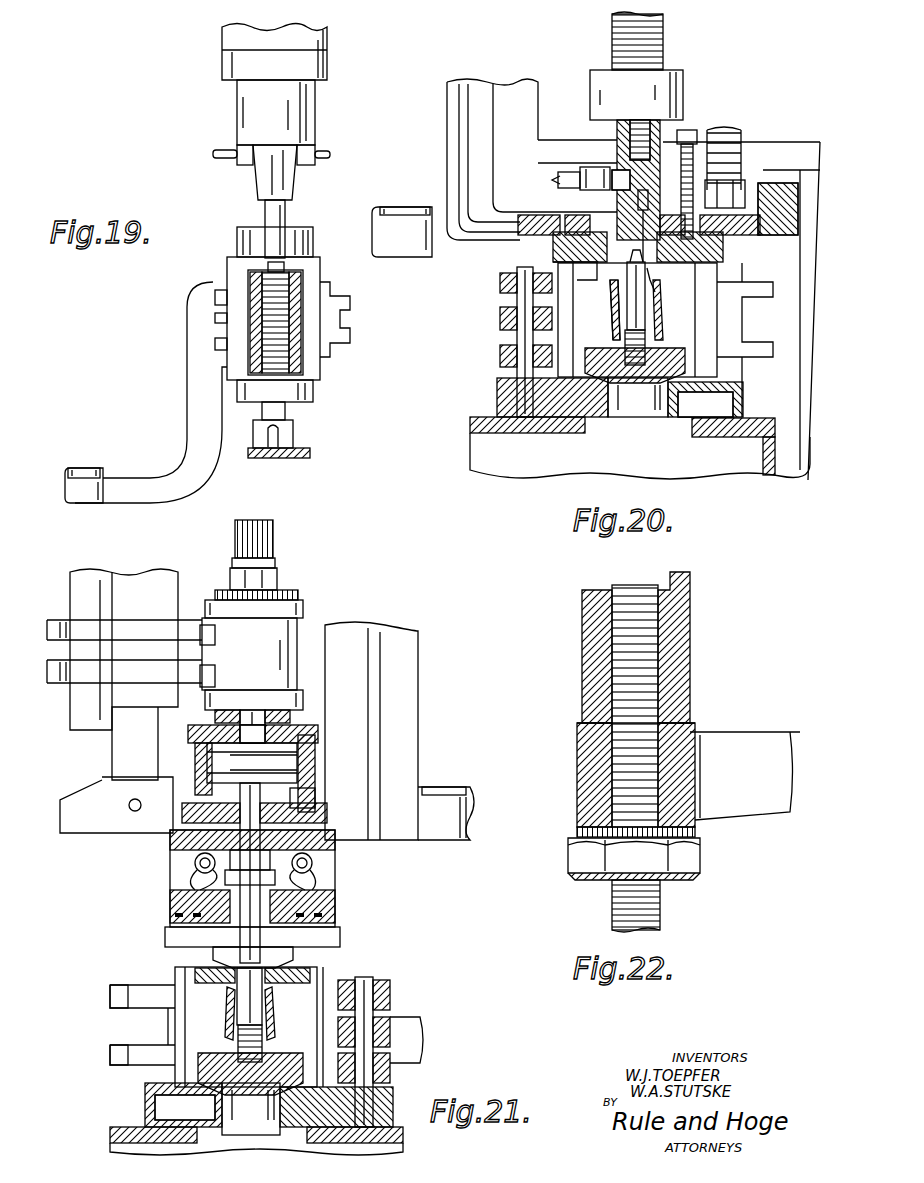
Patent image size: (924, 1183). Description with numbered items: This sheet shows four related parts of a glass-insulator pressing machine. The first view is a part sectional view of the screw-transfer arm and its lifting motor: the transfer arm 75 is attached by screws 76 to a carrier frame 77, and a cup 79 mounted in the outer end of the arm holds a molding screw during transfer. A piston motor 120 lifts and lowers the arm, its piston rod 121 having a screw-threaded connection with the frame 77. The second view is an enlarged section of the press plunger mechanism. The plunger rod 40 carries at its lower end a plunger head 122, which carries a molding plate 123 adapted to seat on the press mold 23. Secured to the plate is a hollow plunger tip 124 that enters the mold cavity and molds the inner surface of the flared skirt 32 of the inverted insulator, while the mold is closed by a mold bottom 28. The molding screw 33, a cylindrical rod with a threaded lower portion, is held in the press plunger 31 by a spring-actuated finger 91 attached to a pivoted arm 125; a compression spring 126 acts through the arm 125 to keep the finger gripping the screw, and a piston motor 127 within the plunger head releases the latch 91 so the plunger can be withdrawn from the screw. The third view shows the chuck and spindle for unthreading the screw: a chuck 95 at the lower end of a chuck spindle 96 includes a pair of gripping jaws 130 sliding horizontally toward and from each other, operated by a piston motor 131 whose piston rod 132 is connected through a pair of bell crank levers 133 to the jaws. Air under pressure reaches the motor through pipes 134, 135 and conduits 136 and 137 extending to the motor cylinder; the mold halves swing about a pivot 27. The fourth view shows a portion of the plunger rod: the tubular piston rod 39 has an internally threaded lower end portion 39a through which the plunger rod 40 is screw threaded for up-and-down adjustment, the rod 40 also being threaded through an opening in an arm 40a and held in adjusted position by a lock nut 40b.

In FIG. 19, the piston motor 120 is at (258, 111).
In FIG. 19, the piston rod 121 is at (277, 213).
In FIG. 19, the carrier frame 77 is at (313, 275).
In FIG. 19, the screws 76 is at (215, 295).
In FIG. 19, the transfer arm 75 is at (190, 360).
In FIG. 20, the transfer arm 75 is at (455, 115).
In FIG. 21, the transfer arm 75 is at (403, 712).
In FIG. 19, the cup 79 is at (90, 470).
In FIG. 20, the cup 79 is at (418, 206).
In FIG. 21, the cup 79 is at (389, 840).
In FIG. 20, the plunger rod 40 is at (665, 48).
In FIG. 22, the plunger rod 40 is at (660, 898).
In FIG. 20, the piston motor 127 is at (628, 178).
In FIG. 20, the plunger head 122 is at (600, 186).
In FIG. 20, the spring-actuated finger 91 is at (650, 265).
In FIG. 20, the compression spring 126 is at (748, 200).
In FIG. 20, the pivoted arm 125 is at (722, 255).
In FIG. 20, the molding plate 123 is at (553, 242).
In FIG. 20, the press mold 23 is at (700, 284).
In FIG. 21, the press mold 23 is at (313, 985).
In FIG. 20, the flared skirt 32 is at (612, 296).
In FIG. 20, the screw 33 is at (635, 305).
In FIG. 21, the screw 33 is at (247, 995).
In FIG. 20, the press plunger 31 is at (658, 310).
In FIG. 20, the plunger tip 124 is at (655, 289).
In FIG. 20, the mold bottom 28 is at (600, 354).
In FIG. 21, the mold bottom 28 is at (288, 1060).
In FIG. 21, the chuck spindle 96 is at (272, 540).
In FIG. 21, the pipe 134 is at (155, 625).
In FIG. 21, the pipe 135 is at (160, 655).
In FIG. 21, the conduit 137 is at (245, 727).
In FIG. 21, the piston motor 131 is at (200, 772).
In FIG. 21, the conduit 136 is at (300, 800).
In FIG. 21, the piston rod 132 is at (250, 805).
In FIG. 21, the chuck 95 is at (165, 886).
In FIG. 21, the bell crank levers 133 is at (200, 860).
In FIG. 21, the gripping jaws 130 is at (197, 940).
In FIG. 21, the pivot 27 is at (370, 1013).
In FIG. 22, the tubular piston rod 39 is at (680, 626).
In FIG. 22, the internally threaded lower end portion 39a is at (670, 684).
In FIG. 22, the arm 40a is at (776, 726).
In FIG. 22, the lock nut 40b is at (690, 856).